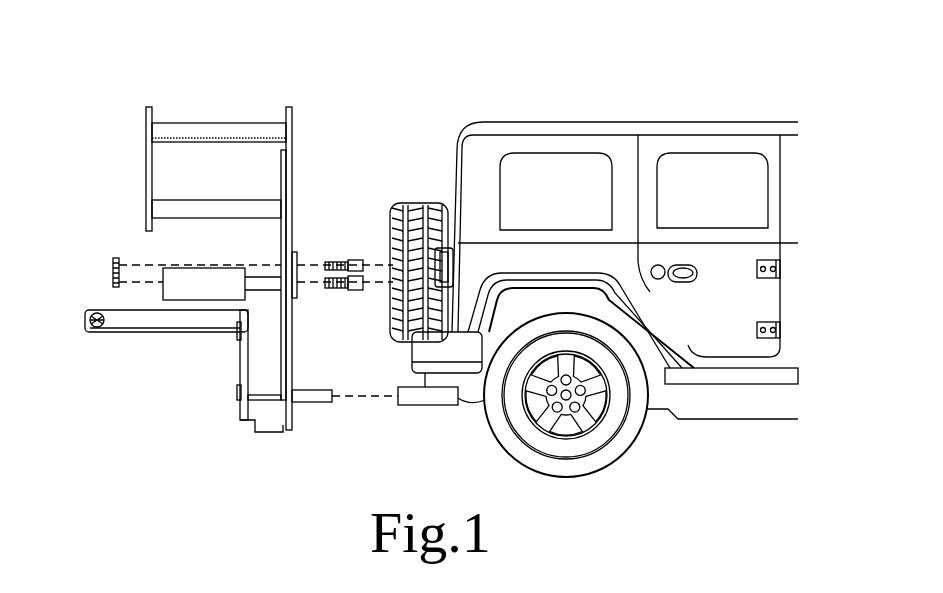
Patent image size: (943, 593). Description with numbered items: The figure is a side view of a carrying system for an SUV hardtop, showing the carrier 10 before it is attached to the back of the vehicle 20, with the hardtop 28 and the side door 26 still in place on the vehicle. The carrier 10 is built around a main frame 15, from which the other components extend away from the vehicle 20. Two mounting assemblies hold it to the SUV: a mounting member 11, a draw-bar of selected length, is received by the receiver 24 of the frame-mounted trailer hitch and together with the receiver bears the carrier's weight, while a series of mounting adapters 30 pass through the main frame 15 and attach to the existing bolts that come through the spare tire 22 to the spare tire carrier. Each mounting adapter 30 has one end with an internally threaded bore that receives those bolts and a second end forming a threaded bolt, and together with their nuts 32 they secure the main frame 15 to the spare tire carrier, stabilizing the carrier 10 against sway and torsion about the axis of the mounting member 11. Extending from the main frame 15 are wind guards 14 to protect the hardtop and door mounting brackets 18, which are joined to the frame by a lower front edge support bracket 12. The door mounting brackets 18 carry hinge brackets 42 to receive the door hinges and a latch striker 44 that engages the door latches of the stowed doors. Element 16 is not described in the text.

The carrier 10 is at (205, 96).
The mounting member 11 is at (312, 403).
The lower front edge support bracket 12 is at (265, 412).
The wind guards 14 is at (146, 132).
The main frame 15 is at (291, 107).
The drive motor 16 is at (278, 240).
The door mounting brackets 18 is at (113, 322).
The vehicle 20 is at (626, 102).
The spare tire 22 is at (425, 203).
The receiver 24 is at (423, 406).
The side door 26 is at (733, 330).
The hardtop 28 is at (522, 143).
The mounting adapters 30 is at (335, 262).
The nuts 32 is at (113, 265).
The hinge brackets 42 is at (237, 330).
The latch striker 44 is at (92, 310).